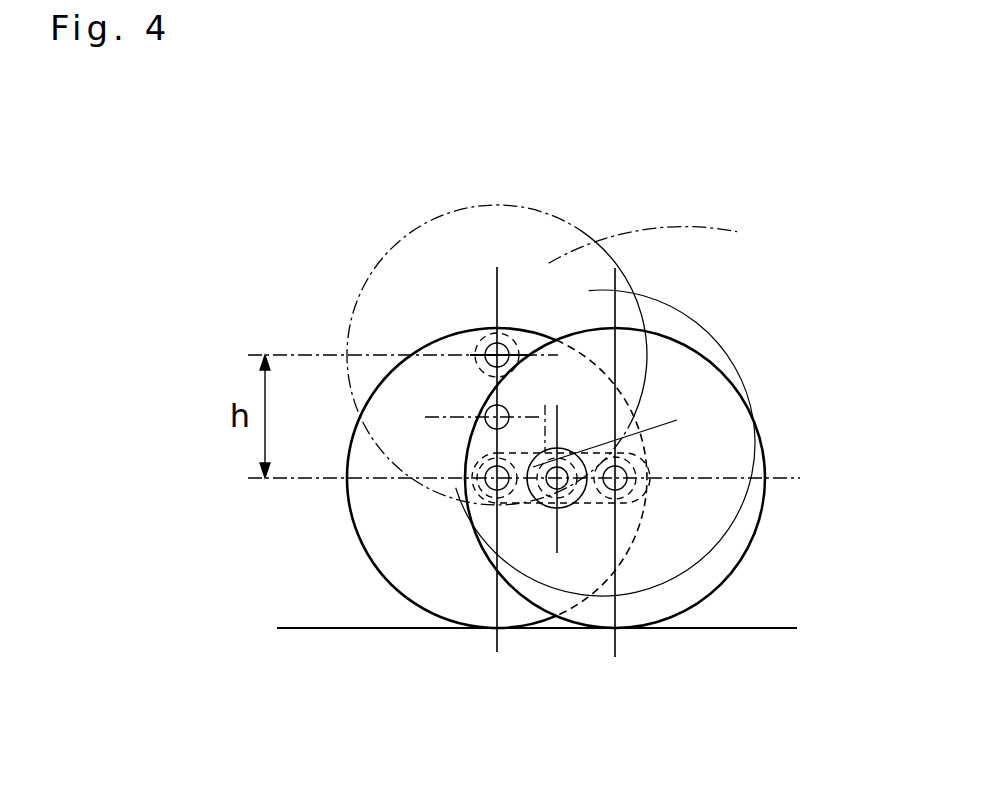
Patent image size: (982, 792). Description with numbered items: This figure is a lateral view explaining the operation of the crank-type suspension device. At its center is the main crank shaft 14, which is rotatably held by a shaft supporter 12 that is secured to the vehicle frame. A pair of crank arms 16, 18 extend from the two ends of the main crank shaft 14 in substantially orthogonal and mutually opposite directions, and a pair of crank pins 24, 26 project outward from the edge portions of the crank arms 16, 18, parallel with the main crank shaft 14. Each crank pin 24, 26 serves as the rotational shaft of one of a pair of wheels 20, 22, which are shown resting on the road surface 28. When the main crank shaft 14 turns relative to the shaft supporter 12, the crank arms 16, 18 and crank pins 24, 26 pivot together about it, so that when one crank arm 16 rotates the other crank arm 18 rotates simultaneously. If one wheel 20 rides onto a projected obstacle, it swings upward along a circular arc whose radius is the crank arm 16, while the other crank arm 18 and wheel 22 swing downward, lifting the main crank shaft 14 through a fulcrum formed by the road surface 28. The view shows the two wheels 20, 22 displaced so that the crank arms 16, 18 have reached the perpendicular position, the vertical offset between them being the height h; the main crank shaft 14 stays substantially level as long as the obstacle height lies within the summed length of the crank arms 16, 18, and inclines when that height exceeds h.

The shaft supporter 12 is at (541, 461).
The main crank shaft 14 is at (573, 548).
The crank arm 16 is at (466, 352).
The crank arm 18 is at (512, 503).
The wheel 20 is at (690, 367).
The wheel 22 is at (373, 560).
The crank pin 24 is at (488, 490).
The crank pin 26 is at (503, 348).
The road surface 28 is at (760, 628).